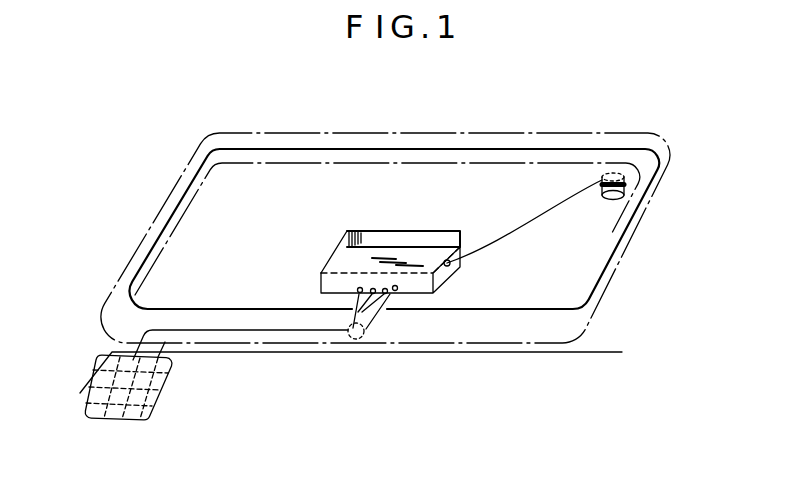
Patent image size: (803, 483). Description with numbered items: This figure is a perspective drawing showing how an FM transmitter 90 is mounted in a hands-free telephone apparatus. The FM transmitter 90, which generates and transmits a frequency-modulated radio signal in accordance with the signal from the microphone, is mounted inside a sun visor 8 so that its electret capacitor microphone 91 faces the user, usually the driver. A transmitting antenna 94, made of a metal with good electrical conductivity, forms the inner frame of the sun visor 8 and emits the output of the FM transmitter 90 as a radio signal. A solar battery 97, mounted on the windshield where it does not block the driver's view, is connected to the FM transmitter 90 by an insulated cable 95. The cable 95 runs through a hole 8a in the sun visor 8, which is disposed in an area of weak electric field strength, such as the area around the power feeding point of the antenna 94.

The sun visor 8 is at (626, 133).
The hole 8a is at (358, 340).
The FM transmitter 90 is at (428, 237).
The electret capacitor microphone 91 is at (606, 201).
The transmitting antenna 94 is at (500, 149).
The insulated cable 95 is at (270, 332).
The solar battery 97 is at (150, 416).